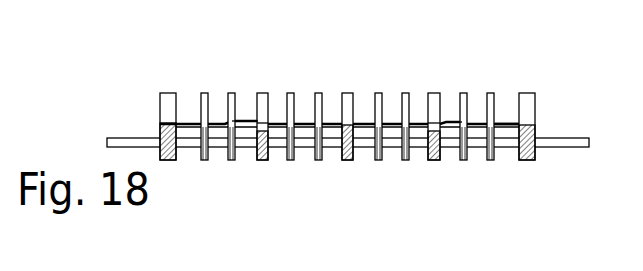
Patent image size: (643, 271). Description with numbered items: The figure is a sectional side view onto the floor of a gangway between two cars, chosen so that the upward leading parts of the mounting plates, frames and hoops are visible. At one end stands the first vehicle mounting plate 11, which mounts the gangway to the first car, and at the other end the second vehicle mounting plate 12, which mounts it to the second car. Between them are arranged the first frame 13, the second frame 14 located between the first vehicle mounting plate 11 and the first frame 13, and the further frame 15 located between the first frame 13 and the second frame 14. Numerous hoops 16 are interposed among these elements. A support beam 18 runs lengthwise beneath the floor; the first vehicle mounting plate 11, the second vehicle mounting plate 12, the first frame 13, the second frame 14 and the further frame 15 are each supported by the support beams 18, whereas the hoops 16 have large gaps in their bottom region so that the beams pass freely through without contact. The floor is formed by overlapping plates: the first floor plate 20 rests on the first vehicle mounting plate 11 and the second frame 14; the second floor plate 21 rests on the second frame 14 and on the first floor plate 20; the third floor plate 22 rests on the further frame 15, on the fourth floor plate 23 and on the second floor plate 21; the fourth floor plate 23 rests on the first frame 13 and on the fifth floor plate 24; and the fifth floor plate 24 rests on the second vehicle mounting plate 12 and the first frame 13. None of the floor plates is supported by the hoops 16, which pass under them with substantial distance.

The first vehicle mounting plate 11 is at (528, 97).
The second vehicle mounting plate 12 is at (167, 97).
The first frame 13 is at (262, 97).
The second frame 14 is at (433, 97).
The further frame 15 is at (348, 97).
The hoops 16 is at (232, 94).
The support beams 18 is at (568, 147).
The first floor plate 20 is at (503, 125).
The second floor plate 21 is at (447, 122).
The third floor plate 22 is at (328, 124).
The fourth floor plate 23 is at (240, 122).
The fifth floor plate 24 is at (177, 124).